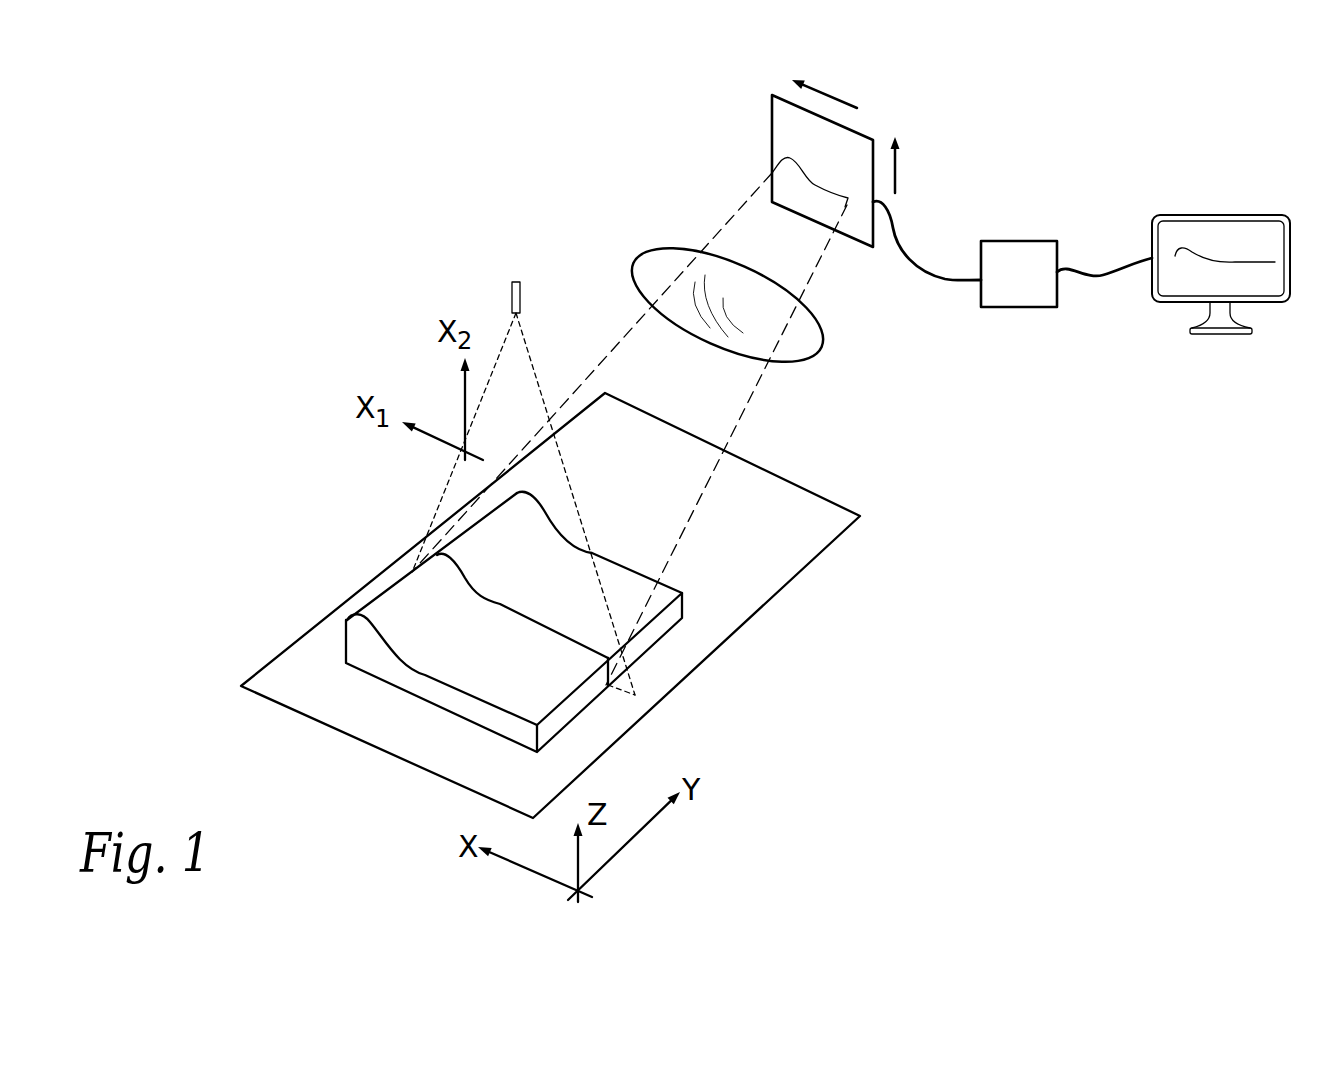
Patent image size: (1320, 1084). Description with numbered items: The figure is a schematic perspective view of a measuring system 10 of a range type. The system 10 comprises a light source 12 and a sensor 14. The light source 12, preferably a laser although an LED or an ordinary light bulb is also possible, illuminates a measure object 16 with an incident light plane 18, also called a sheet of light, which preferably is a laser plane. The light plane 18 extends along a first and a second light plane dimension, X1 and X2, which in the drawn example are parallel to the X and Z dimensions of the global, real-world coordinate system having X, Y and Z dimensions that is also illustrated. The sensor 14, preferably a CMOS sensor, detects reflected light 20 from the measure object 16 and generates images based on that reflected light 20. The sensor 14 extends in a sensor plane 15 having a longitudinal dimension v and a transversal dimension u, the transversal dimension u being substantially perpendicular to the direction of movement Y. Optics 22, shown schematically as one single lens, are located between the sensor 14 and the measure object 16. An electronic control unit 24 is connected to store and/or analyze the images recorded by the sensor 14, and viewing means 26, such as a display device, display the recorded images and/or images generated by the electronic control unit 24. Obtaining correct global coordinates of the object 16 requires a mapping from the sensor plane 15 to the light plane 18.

The measuring system 10 is at (320, 337).
The light source 12 is at (510, 295).
The sensor 14 is at (844, 162).
The sensor plane 15 is at (778, 130).
The measure object 16 is at (329, 643).
The light plane 18 is at (546, 374).
The reflected light 20 is at (762, 400).
The optics 22 is at (805, 337).
The electronic control unit 24 is at (1033, 286).
The viewing means 26 is at (1270, 242).